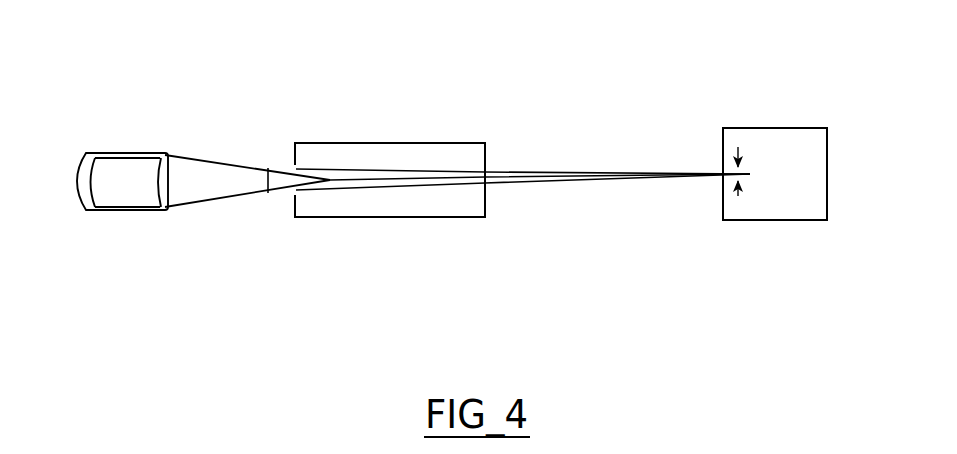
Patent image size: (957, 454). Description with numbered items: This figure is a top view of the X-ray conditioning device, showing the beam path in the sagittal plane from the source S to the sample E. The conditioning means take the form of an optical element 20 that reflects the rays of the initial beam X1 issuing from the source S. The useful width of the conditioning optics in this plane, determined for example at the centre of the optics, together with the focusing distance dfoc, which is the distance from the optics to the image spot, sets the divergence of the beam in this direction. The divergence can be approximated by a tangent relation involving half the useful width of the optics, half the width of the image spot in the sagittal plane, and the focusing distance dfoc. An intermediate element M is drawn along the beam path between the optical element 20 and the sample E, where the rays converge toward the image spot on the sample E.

The optical element 20 is at (100, 150).
The source of X-rays S is at (153, 213).
The initial beam X1 is at (125, 122).
The focusing optics / lens M is at (431, 222).
The sample E is at (738, 123).
The focusing distance dfoc is at (722, 300).